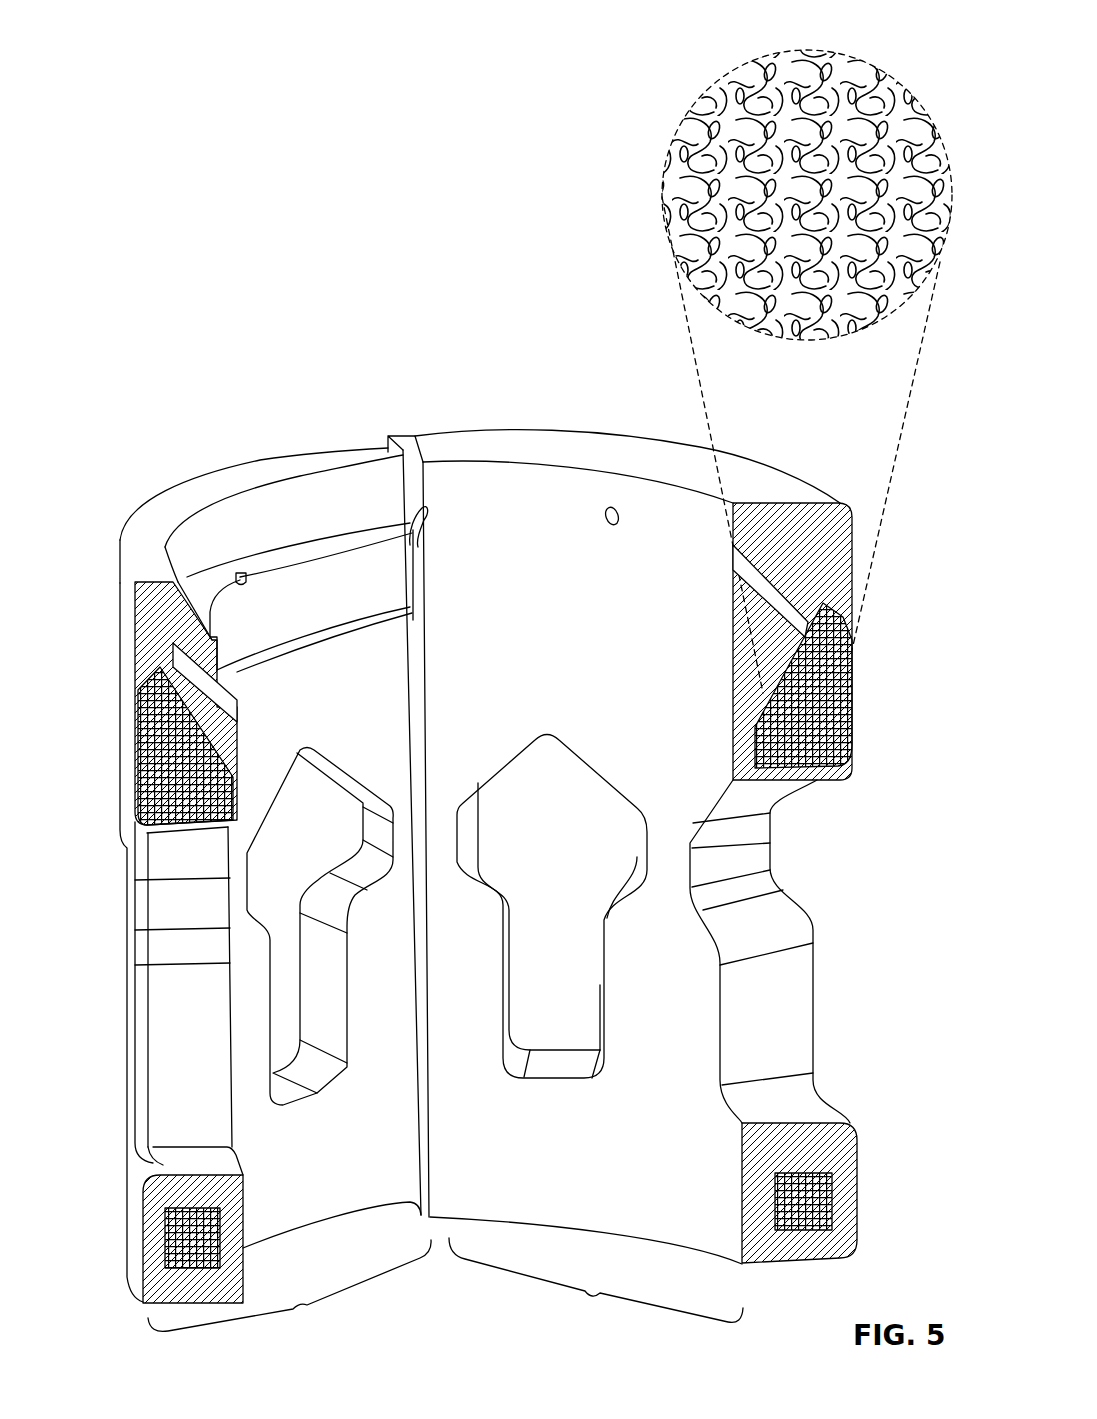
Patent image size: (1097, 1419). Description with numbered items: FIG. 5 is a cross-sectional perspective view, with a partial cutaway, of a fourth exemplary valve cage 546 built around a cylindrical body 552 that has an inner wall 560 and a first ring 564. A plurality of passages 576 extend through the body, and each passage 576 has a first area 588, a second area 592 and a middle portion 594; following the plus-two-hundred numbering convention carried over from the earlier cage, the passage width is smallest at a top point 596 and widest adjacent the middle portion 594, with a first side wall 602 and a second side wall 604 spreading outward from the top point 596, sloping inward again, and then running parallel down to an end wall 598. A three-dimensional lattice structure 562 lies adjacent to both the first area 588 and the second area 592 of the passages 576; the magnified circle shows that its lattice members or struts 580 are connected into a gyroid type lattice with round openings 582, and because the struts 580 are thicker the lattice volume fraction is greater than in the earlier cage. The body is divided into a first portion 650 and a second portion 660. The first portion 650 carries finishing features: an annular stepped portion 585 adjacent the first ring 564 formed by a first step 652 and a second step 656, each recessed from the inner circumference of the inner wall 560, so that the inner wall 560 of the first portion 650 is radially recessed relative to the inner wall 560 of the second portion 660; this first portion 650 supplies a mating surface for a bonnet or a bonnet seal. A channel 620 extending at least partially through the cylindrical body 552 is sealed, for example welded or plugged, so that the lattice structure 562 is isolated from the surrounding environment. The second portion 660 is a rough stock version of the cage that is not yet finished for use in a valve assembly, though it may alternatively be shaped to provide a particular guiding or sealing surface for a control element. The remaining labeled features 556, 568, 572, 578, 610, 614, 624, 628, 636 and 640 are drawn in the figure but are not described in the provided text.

The fourth exemplary valve cage 546 is at (905, 497).
The cylindrical body 552 is at (478, 480).
The flange end section 556 is at (852, 530).
The inner wall 560 is at (690, 507).
The three-dimensional lattice structure 562 is at (150, 742).
The first ring 564 is at (162, 517).
The base ring 568 is at (137, 1290).
The flange cut face 572 is at (837, 588).
The passages 576 is at (330, 797).
The circumferential direction 578 is at (596, 980).
The lattice members 580 is at (742, 78).
The round openings 582 is at (833, 1205).
The annular stepped portion 585 is at (378, 486).
The first area 588 is at (588, 822).
The second area 592 is at (568, 1010).
The middle portion 594 is at (491, 877).
The top point 596 is at (547, 730).
The end wall 598 is at (553, 1067).
The first side wall 602 is at (463, 837).
The second side wall 604 is at (643, 853).
The cut face 610 is at (143, 720).
The aperture 614 is at (240, 797).
The channel 620 is at (400, 445).
The notch 624 is at (241, 573).
The groove 628 is at (733, 583).
The channel 636 is at (158, 660).
The lower edge 640 is at (157, 820).
The first portion 650 is at (289, 1270).
The first step 652 is at (300, 628).
The second step 656 is at (320, 542).
The second portion 660 is at (586, 1275).